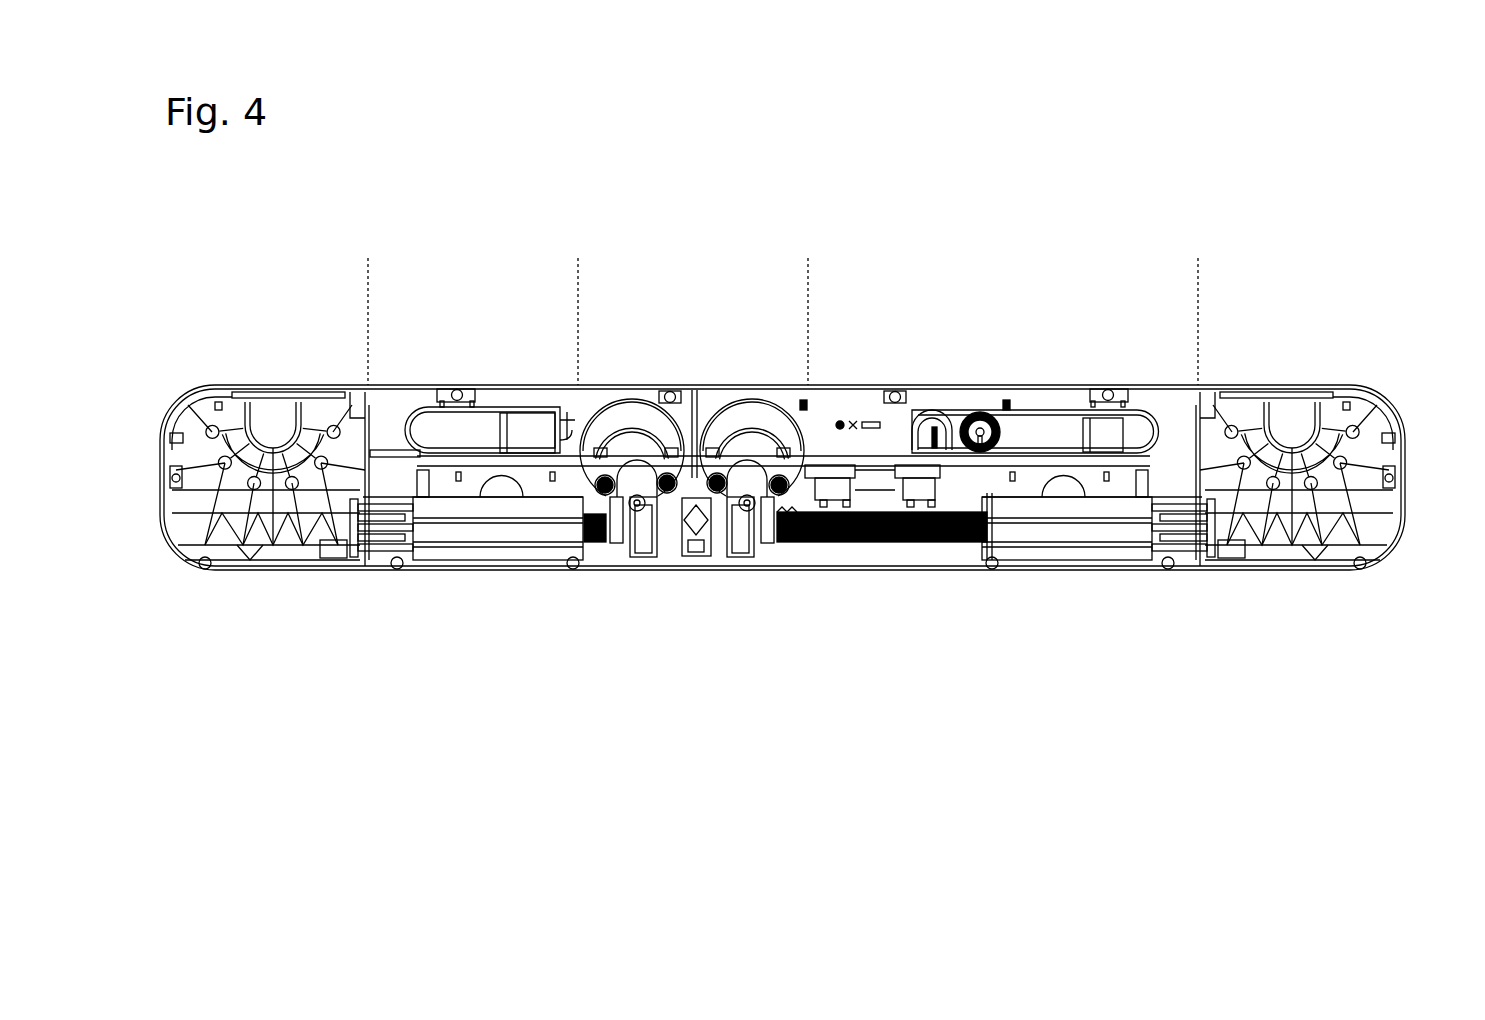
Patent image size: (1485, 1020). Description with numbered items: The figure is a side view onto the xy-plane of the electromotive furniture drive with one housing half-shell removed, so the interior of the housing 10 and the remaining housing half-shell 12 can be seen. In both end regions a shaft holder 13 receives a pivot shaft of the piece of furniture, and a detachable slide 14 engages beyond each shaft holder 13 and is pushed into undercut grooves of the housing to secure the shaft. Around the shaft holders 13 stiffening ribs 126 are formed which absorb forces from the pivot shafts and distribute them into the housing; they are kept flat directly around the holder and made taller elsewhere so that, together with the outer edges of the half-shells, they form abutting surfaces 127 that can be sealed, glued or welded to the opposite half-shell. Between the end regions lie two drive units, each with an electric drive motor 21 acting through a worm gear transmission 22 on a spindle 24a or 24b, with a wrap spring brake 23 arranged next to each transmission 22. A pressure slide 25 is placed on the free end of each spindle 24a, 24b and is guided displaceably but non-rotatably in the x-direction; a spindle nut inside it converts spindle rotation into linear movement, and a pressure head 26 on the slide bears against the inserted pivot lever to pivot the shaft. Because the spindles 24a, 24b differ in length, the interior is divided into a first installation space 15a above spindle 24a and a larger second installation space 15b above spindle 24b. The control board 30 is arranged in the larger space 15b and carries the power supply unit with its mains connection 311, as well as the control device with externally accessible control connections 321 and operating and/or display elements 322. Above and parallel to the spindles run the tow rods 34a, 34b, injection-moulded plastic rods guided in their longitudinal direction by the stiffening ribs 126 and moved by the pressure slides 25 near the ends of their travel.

The housing 10 is at (1252, 258).
The housing half-shell 12 is at (542, 374).
The shaft holder 13 is at (273, 428).
The slide 14 is at (197, 400).
The first installation space 15a is at (368, 253).
The second installation space 15b is at (1198, 253).
The electric drive motor 21 is at (633, 418).
The transmission 22 is at (650, 545).
The brake 23 is at (625, 515).
The spindle 24a is at (592, 548).
The spindle 24b is at (873, 543).
The pressure slide 25 is at (508, 527).
The pressure head 26 is at (340, 562).
The control board 30 is at (1042, 452).
The tow rod 34a is at (482, 466).
The tow rod 34b is at (1022, 470).
The stiffening ribs 126 is at (697, 395).
The abutting surfaces 127 is at (352, 403).
The mains connection 311 is at (1108, 428).
The control connections 321 is at (936, 437).
The operating and/or display elements 322 is at (984, 424).